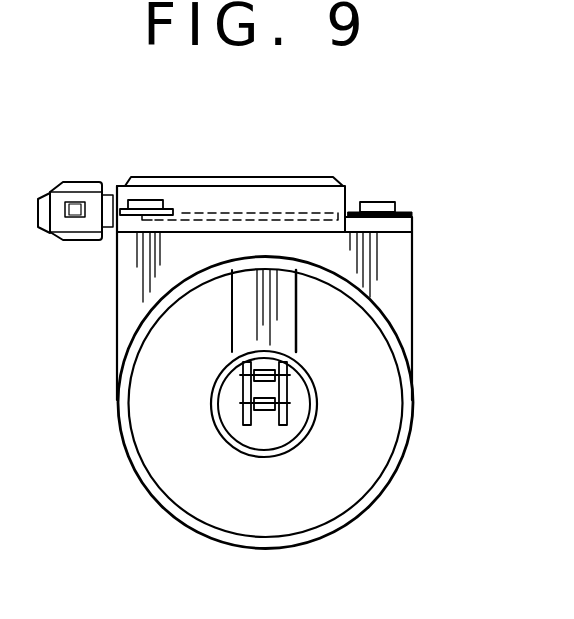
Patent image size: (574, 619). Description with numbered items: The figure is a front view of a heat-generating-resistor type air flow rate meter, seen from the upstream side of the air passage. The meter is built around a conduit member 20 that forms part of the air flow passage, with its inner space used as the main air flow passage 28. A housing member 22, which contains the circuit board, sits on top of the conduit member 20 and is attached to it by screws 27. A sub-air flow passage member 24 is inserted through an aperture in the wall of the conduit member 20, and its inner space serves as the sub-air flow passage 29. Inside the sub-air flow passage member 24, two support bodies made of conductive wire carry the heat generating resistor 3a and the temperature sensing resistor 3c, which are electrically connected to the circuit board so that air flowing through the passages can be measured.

The conduit member 20 is at (386, 318).
The housing member 22 is at (270, 176).
The screws 27 is at (147, 200).
The sub-air flow passage member 24 is at (260, 455).
The main air flow passage 28 is at (308, 492).
The sub-air flow passage 29 is at (253, 437).
The temperature sensing resistor 3c is at (267, 364).
The heat generating resistor 3a is at (267, 406).